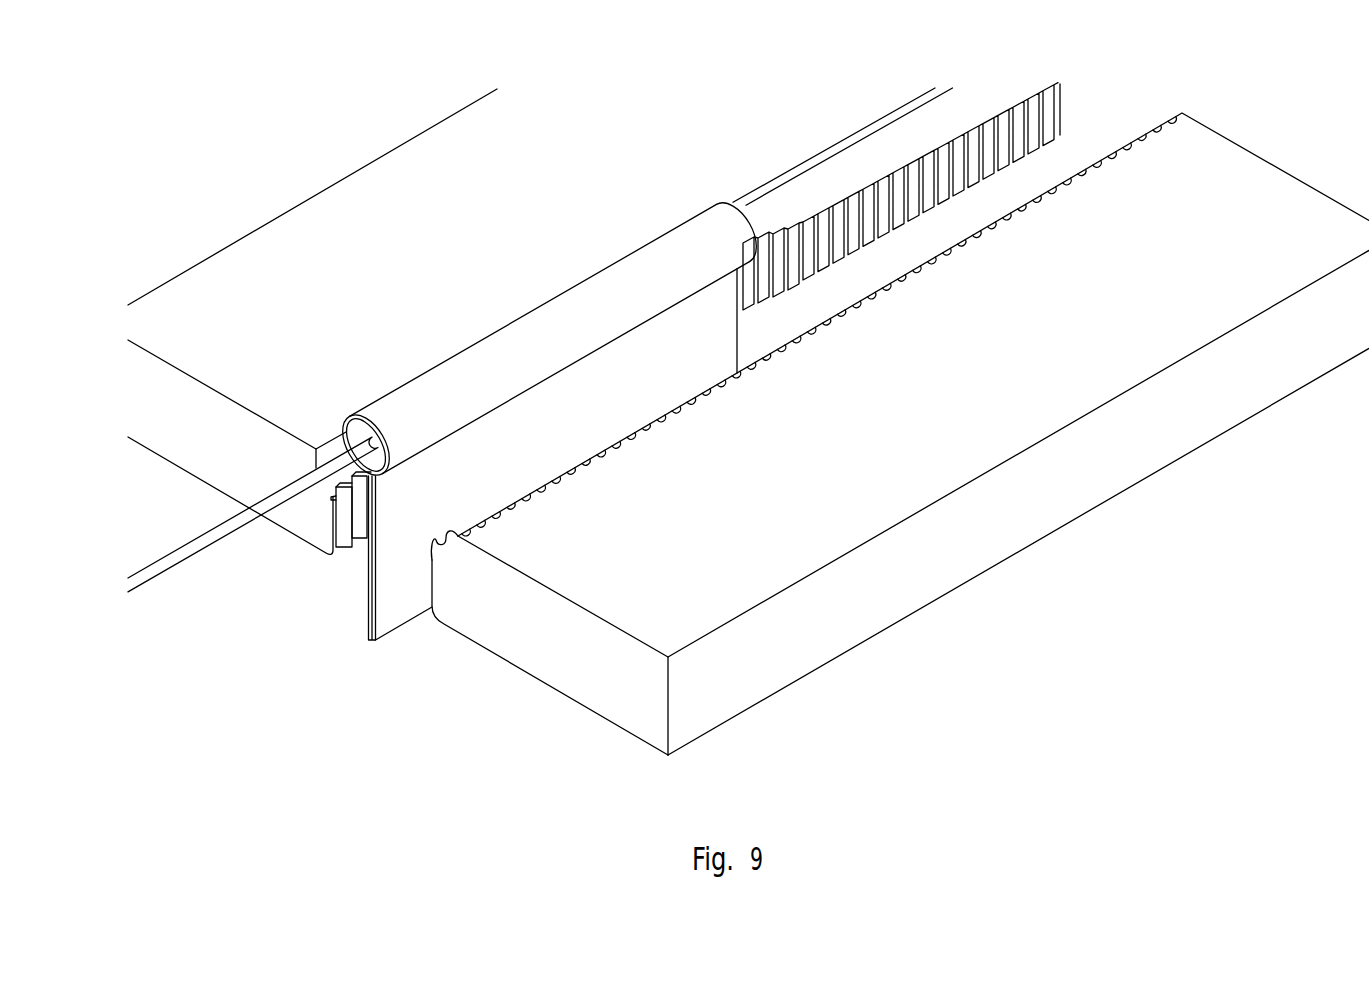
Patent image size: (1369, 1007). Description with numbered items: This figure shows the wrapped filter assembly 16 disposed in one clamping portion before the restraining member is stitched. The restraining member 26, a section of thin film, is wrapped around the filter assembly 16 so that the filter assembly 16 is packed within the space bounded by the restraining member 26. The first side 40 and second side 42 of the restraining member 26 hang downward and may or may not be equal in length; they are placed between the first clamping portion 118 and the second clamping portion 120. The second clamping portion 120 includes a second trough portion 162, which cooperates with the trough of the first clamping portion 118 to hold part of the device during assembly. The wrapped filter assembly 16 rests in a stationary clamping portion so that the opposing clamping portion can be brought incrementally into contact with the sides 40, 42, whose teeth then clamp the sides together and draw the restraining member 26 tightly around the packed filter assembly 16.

The filter assembly 16 is at (565, 269).
The second clamping portion 120 is at (383, 317).
The second trough portion 162 is at (331, 447).
The restraining member 26 is at (547, 451).
The first clamping portion 118 is at (702, 546).
The second side 42 is at (393, 618).
The first side 40 is at (370, 621).